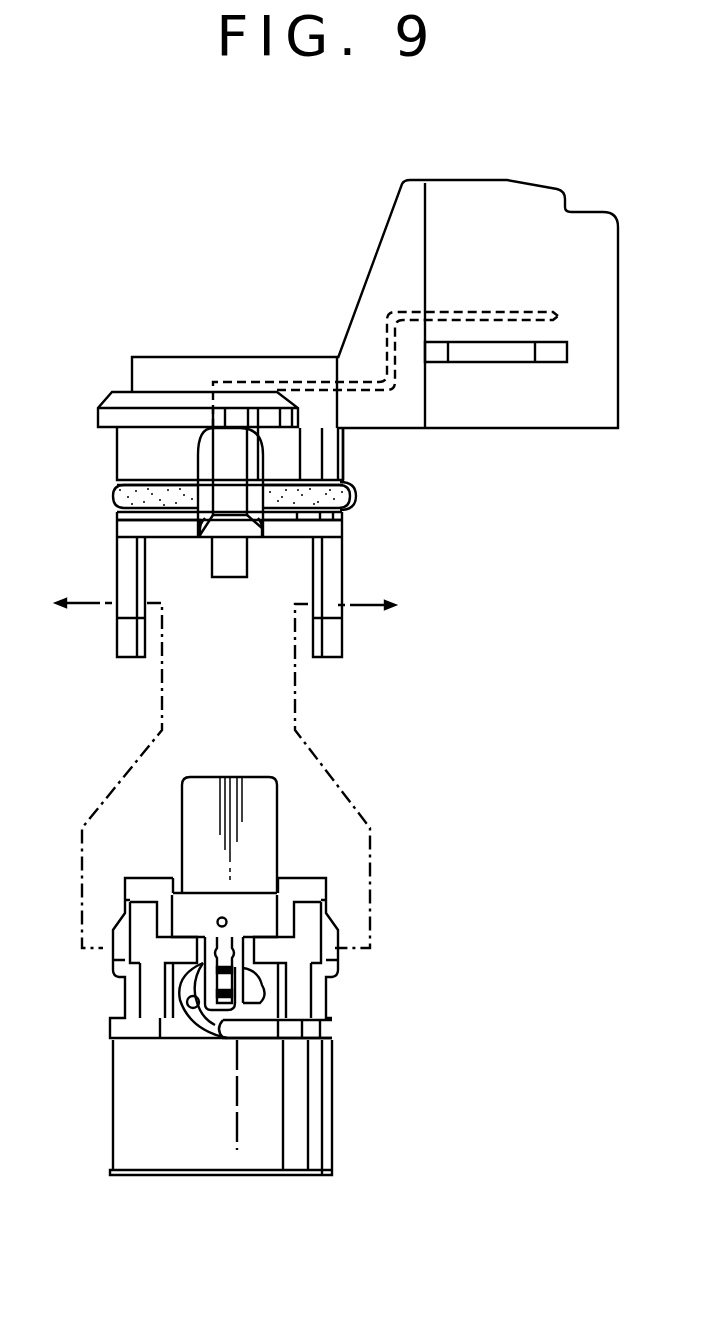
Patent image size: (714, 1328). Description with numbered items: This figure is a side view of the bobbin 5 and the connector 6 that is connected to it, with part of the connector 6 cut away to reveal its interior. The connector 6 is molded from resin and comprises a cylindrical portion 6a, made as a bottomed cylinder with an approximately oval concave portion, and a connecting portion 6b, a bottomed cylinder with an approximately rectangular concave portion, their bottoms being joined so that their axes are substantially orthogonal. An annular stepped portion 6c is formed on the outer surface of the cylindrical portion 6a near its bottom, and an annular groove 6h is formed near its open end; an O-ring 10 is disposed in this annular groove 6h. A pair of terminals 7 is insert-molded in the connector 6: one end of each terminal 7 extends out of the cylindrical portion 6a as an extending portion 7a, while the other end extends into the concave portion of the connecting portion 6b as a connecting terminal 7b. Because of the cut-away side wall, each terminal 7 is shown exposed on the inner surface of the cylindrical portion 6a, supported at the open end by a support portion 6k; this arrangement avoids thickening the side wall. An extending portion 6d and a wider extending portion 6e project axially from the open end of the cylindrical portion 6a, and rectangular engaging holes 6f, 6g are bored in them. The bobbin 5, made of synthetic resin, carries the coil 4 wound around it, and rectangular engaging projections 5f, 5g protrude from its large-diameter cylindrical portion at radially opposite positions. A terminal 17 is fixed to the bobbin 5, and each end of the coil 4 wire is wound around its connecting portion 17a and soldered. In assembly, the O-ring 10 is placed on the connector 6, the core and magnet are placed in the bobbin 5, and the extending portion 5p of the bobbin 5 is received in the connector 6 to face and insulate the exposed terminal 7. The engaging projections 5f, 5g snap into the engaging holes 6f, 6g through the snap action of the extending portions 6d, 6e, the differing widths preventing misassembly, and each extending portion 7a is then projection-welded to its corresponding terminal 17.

The coil 4 is at (102, 1090).
The bobbin 5 is at (108, 994).
The engaging projection 5f is at (330, 975).
The engaging projection 5g is at (117, 960).
The extending portion 5p is at (192, 823).
The connector 6 is at (234, 352).
The cylindrical portion 6a is at (327, 452).
The connecting portion 6b is at (537, 403).
The annular stepped portion 6c is at (111, 398).
The extending portion 6d is at (328, 643).
The extending portion 6e is at (128, 640).
The engaging hole 6f is at (327, 543).
The engaging hole 6g is at (128, 540).
The annular groove 6h is at (350, 487).
The support portion 6k is at (217, 525).
The terminal 7 is at (225, 467).
The extending portion 7a is at (228, 565).
The connecting terminal 7b is at (452, 308).
The O-ring 10 is at (113, 497).
The terminal 17 is at (265, 922).
The connecting portion 17a is at (233, 1005).